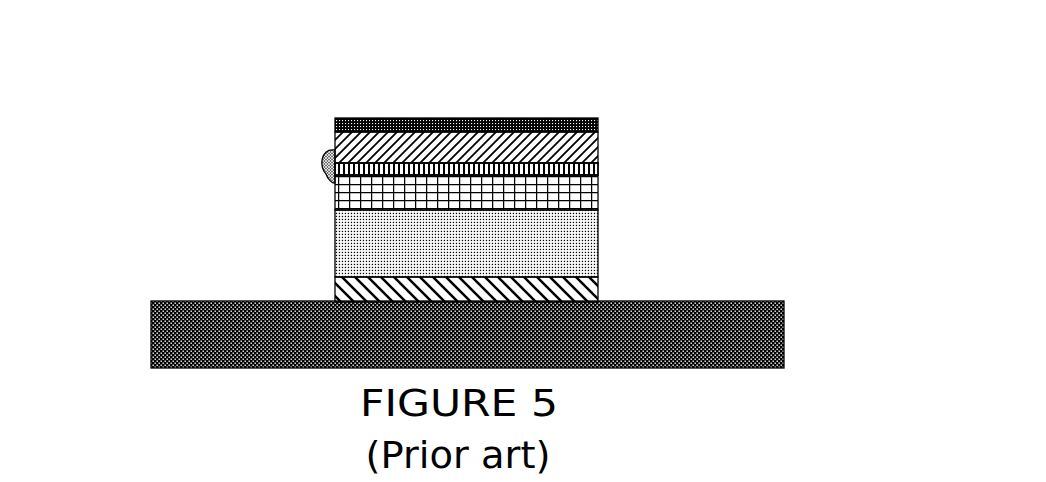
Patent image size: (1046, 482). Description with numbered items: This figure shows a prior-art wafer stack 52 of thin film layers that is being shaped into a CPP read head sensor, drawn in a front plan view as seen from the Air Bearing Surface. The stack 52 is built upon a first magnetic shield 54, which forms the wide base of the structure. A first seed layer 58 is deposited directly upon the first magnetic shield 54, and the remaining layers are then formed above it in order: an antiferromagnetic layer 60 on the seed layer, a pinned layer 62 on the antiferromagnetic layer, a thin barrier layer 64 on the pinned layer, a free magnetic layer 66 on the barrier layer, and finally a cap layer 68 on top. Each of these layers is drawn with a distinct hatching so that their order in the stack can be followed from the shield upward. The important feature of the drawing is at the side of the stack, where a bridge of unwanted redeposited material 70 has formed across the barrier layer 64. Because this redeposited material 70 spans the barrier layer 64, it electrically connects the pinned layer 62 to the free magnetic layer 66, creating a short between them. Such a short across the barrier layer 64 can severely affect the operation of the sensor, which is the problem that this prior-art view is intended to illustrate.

The wafer stack 52 is at (457, 163).
The first magnetic shield 54 is at (153, 345).
The first seed layer 58 is at (325, 278).
The antiferromagnetic layer 60 is at (325, 243).
The pinned layer 62 is at (590, 192).
The barrier layer 64 is at (590, 160).
The free magnetic layer 66 is at (590, 140).
The cap layer 68 is at (590, 110).
The redeposited material 70 is at (317, 155).